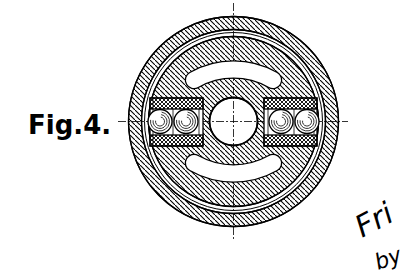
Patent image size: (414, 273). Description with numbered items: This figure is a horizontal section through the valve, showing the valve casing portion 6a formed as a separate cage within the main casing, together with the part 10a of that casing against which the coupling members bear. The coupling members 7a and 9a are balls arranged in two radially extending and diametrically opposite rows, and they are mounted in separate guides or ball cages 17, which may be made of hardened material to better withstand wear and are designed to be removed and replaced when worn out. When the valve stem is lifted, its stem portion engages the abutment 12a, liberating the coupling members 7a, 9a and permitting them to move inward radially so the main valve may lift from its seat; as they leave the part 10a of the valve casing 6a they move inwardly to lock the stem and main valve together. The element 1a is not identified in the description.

The bearing housing 1a is at (292, 90).
The valve casing portion 6a is at (157, 55).
The coupling members 7a is at (274, 122).
The coupling members 9a is at (153, 124).
The part of the valve casing 10a is at (322, 116).
The abutment 12a is at (176, 188).
The ball cages 17 is at (322, 138).